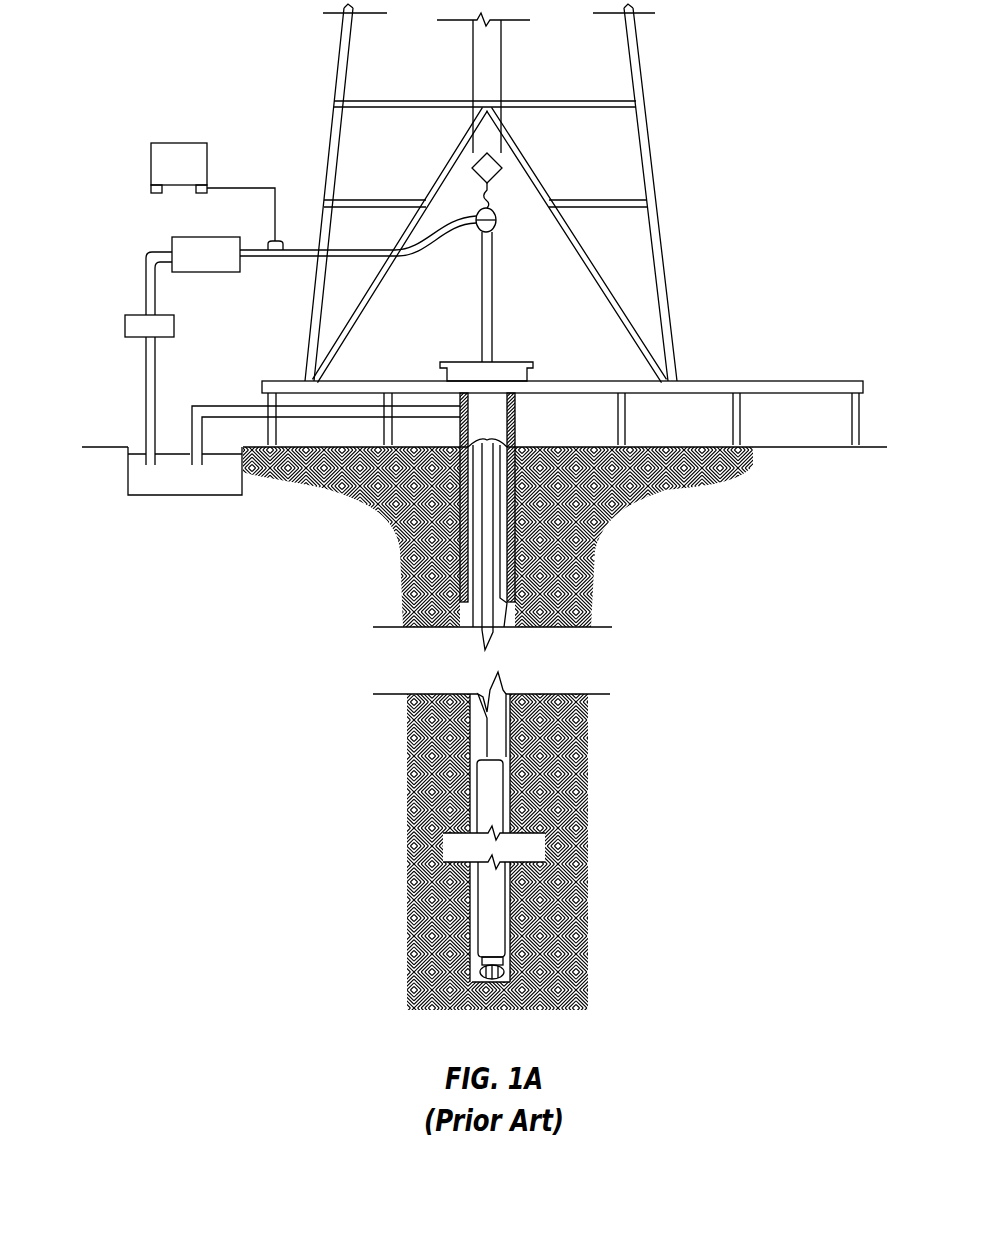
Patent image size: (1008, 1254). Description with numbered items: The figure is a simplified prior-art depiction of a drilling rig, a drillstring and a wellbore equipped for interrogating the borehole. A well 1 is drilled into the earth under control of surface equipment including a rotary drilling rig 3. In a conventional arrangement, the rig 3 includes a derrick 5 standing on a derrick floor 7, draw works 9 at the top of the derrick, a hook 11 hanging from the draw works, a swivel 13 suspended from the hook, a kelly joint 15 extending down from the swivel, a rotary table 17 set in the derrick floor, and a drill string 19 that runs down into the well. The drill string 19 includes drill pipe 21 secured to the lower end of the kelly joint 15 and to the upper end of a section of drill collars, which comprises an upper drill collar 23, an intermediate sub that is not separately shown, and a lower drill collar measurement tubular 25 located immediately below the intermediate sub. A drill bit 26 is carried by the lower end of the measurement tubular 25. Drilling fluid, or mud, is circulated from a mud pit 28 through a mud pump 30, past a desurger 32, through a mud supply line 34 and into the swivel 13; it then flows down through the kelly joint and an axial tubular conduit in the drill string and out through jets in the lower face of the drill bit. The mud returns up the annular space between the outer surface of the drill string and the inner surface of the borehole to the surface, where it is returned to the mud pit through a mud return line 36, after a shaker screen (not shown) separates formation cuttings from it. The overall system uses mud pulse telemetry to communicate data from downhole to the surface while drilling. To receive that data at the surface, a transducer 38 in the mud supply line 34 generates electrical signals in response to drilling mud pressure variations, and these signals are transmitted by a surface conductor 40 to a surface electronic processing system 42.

The well 1 is at (470, 614).
The rotary drilling rig 3 is at (521, 193).
The derrick 5 is at (663, 243).
The derrick floor 7 is at (807, 380).
The draw works 9 is at (502, 70).
The hook 11 is at (500, 215).
The swivel 13 is at (472, 232).
The kelly joint 15 is at (494, 265).
The rotary table 17 is at (521, 362).
The drill string 19 is at (502, 584).
The drill pipe 21 is at (487, 743).
The upper drill collar 23 is at (510, 758).
The lower drill collar measurement tubular 25 is at (508, 878).
The drill bit 26 is at (507, 972).
The mud pit 28 is at (197, 495).
The mud pump 30 is at (124, 328).
The desurger 32 is at (191, 237).
The mud supply line 34 is at (406, 258).
The mud return line 36 is at (353, 418).
The transducer 38 is at (274, 240).
The surface conductor 40 is at (224, 187).
The surface electronic processing system 42 is at (169, 143).